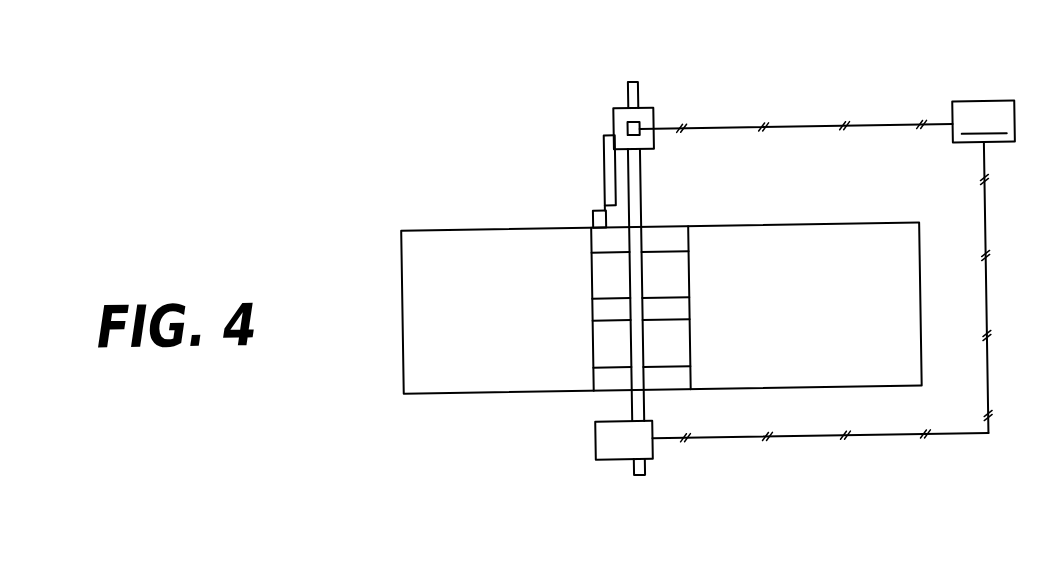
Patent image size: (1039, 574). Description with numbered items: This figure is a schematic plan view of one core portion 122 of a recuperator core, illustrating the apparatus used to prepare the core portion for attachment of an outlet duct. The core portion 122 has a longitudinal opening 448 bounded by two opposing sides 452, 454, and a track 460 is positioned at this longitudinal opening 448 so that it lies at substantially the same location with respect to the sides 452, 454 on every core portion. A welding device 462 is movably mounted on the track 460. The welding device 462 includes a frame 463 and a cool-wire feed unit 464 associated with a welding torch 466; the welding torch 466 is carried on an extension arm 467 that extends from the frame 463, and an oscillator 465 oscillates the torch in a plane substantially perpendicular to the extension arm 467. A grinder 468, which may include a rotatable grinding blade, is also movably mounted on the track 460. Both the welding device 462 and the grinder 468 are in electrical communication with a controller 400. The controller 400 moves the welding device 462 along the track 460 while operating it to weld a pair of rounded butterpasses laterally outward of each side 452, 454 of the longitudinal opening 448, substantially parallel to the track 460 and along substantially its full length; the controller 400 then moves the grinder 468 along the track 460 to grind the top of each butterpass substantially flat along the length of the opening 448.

The core portion 122 is at (412, 266).
The controller 400 is at (829, 272).
The longitudinal opening 448 is at (615, 355).
The side of the longitudinal opening 452 is at (590, 282).
The side of the longitudinal opening 454 is at (693, 281).
The track 460 is at (643, 402).
The welding device 462 is at (605, 125).
The frame 463 is at (650, 112).
The cool-wire feed unit 464 is at (604, 210).
The oscillator 465 is at (647, 135).
The welding torch 466 is at (595, 240).
The extension arm 467 is at (607, 148).
The grinder 468 is at (637, 445).